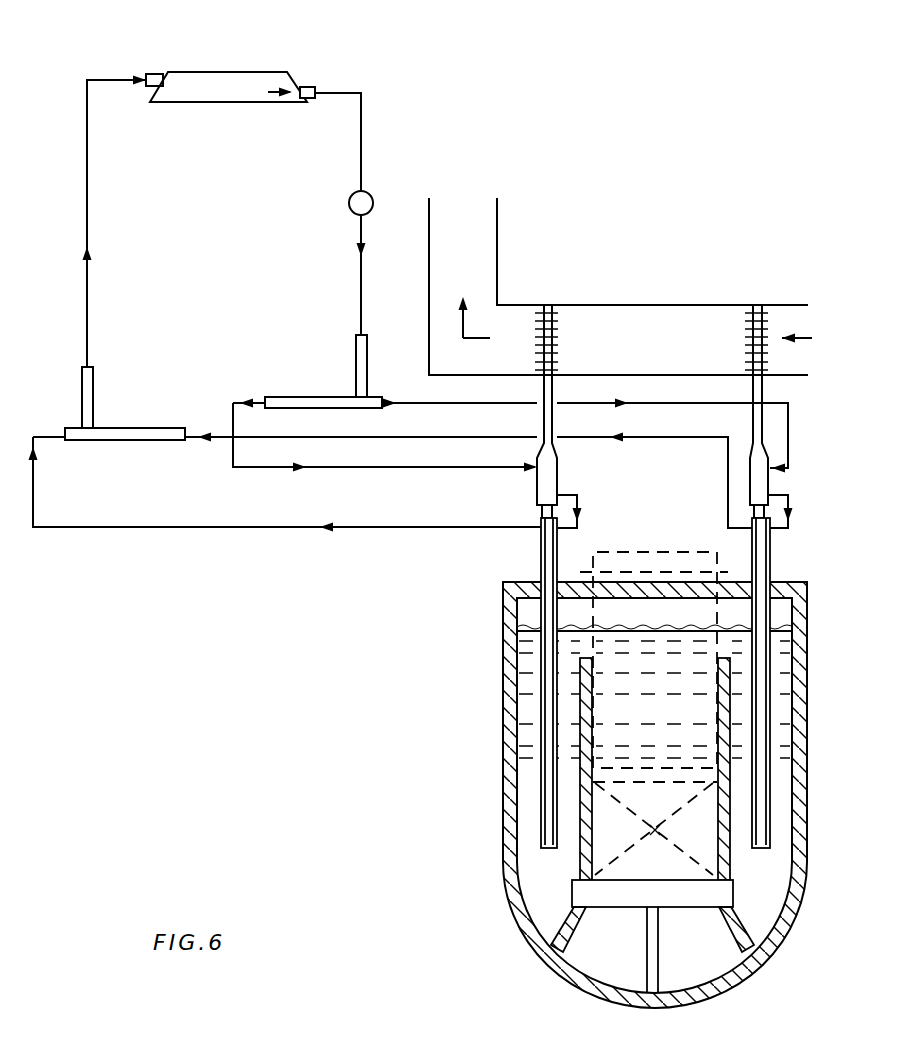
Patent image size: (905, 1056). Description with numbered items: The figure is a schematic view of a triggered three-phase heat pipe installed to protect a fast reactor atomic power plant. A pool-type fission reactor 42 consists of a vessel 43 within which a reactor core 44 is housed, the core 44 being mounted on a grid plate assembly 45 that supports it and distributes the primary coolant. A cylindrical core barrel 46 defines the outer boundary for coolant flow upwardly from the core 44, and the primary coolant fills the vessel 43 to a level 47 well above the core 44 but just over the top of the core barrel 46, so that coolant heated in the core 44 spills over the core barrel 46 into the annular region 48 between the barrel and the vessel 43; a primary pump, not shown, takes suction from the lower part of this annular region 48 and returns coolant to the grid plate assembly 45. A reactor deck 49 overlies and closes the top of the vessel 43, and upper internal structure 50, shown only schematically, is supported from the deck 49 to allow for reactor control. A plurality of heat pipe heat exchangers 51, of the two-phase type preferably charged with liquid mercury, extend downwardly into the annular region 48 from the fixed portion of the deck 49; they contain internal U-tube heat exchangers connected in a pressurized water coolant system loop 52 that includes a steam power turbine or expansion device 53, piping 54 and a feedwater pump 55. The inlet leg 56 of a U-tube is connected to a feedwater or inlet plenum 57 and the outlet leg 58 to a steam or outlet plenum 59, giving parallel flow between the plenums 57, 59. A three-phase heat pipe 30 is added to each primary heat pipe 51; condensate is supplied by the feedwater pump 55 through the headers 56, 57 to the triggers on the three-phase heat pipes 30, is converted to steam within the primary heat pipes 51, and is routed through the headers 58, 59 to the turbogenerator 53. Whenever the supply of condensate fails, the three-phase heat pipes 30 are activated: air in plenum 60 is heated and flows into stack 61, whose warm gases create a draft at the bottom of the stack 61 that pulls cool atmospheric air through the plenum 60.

The three-phase heat pipe 30 is at (553, 470).
The fission reactor 42 is at (640, 656).
The vessel 43 is at (503, 712).
The reactor core 44 is at (642, 813).
The grid plate assembly 45 is at (641, 895).
The cylindrical core barrel 46 is at (732, 682).
The level 47 is at (775, 630).
The annular region 48 is at (527, 815).
The reactor deck 49 is at (525, 582).
The upper internal structure 50 is at (645, 548).
The heat pipe heat exchanger 51 is at (541, 740).
The pressurized water coolant system loop 52 is at (338, 86).
The steam power turbine 53 is at (229, 70).
The piping 54 is at (361, 130).
The feedwater pump 55 is at (349, 201).
The inlet leg 56 is at (430, 403).
The inlet plenum 57 is at (314, 397).
The outlet leg 58 is at (216, 437).
The outlet plenum 59 is at (113, 430).
The plenum 60 is at (627, 348).
The stack 61 is at (448, 268).